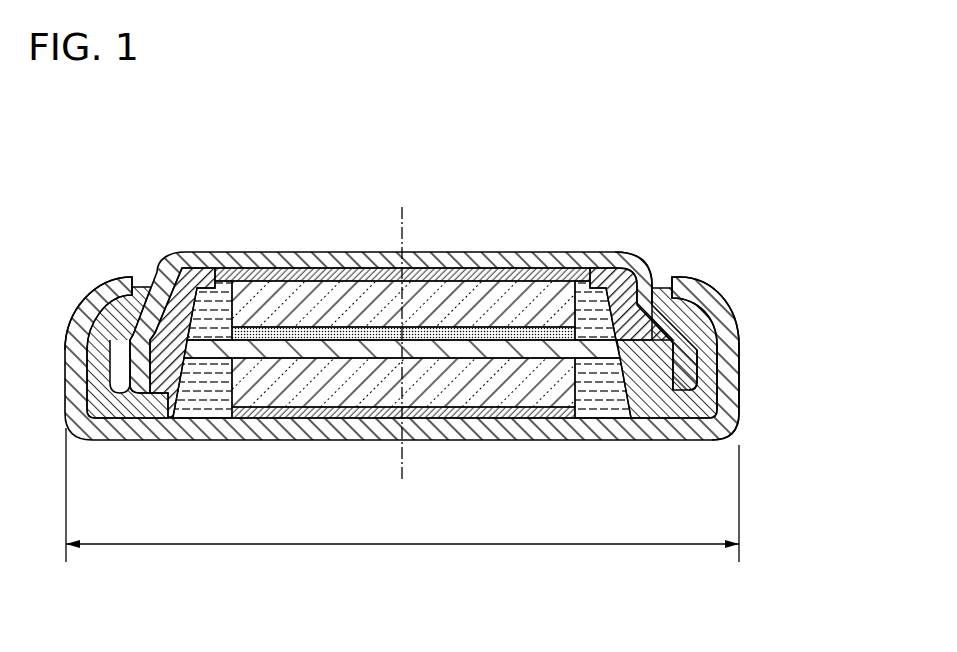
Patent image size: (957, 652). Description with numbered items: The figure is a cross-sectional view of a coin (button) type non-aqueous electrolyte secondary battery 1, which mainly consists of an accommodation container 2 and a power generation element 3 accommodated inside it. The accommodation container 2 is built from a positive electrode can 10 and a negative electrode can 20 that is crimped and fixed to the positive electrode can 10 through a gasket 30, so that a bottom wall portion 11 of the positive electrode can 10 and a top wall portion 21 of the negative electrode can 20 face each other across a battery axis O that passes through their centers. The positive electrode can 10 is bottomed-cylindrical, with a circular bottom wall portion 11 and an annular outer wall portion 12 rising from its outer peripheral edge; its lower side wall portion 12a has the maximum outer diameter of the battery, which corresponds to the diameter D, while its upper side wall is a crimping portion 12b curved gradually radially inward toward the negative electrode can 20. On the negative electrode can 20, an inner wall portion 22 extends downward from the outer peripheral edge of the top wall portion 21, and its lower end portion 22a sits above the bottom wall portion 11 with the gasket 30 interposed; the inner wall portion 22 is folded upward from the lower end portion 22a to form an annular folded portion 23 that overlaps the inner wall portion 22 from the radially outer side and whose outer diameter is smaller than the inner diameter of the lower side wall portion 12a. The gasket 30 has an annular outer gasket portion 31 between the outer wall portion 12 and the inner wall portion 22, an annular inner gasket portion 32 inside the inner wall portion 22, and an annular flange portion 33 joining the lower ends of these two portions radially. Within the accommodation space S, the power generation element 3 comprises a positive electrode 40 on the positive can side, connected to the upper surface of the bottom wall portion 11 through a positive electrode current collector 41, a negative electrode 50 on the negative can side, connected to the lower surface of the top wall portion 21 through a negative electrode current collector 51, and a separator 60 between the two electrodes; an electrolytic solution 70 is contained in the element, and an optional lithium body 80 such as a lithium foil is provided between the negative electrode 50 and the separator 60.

The non-aqueous electrolyte secondary battery 1 is at (706, 150).
The accommodation container 2 is at (145, 162).
The power generation element 3 is at (226, 280).
The positive electrode can 10 is at (76, 297).
The bottom wall portion 11 is at (348, 432).
The outer wall portion 12 is at (845, 263).
The lower side wall portion 12a is at (731, 358).
The crimping portion 12b is at (699, 297).
The negative electrode can 20 is at (187, 247).
The top wall portion 21 is at (362, 251).
The inner wall portion 22 is at (653, 262).
The lower end portion 22a is at (672, 388).
The folded portion 23 is at (688, 353).
The gasket 30 is at (116, 292).
The outer gasket portion 31 is at (704, 373).
The inner gasket portion 32 is at (640, 360).
The flange portion 33 is at (680, 405).
The positive electrode 40 is at (458, 395).
The positive electrode current collector 41 is at (498, 412).
The negative electrode 50 is at (478, 292).
The negative electrode current collector 51 is at (437, 270).
The separator 60 is at (521, 347).
The electrolytic solution 70 is at (595, 322).
The lithium body 80 is at (548, 332).
The accommodation space S is at (200, 372).
The battery axis O is at (402, 207).
The diameter D is at (402, 504).